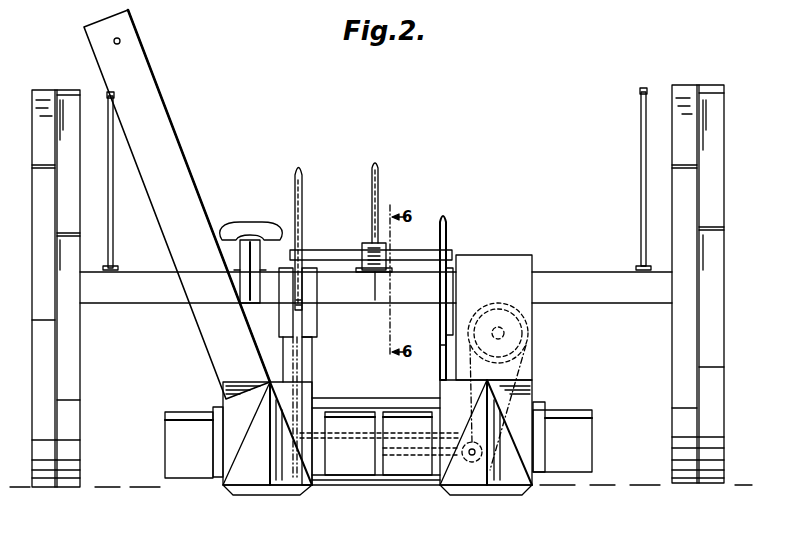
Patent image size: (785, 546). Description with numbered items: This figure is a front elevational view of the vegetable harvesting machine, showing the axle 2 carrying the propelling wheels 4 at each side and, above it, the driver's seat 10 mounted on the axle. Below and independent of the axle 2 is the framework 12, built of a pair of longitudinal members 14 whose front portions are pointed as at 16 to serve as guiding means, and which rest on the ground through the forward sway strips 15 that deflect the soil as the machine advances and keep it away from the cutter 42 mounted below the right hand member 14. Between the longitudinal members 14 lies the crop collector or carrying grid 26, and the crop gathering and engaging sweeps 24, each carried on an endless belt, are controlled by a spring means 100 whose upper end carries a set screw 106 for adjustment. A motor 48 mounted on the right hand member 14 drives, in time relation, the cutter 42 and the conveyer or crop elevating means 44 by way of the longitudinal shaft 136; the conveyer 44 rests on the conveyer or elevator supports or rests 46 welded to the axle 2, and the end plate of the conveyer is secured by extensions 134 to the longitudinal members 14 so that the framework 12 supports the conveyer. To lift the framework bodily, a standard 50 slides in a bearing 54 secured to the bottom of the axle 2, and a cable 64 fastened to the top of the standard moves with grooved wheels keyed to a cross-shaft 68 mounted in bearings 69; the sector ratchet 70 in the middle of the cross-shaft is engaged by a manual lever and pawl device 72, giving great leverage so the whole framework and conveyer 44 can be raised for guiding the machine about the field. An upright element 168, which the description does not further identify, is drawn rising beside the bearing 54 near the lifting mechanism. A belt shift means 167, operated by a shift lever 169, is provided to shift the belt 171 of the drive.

The axle 2 is at (145, 303).
The propelling wheels 4 is at (32, 290).
The driver's seat 10 is at (252, 226).
The framework 12 is at (232, 388).
The longitudinal members 14 is at (536, 405).
The forward sway strips 15 is at (297, 495).
The pointed front portions 16 is at (268, 470).
The sweeps 24 is at (178, 460).
The crop collector or carrying grid 26 is at (352, 486).
The cutter 42 is at (366, 481).
The conveyer or crop elevating means 44 is at (190, 186).
The conveyer or elevator supports or rests 46 is at (114, 222).
The motor 48 is at (490, 258).
The standard 50 is at (307, 360).
The bearing 54 is at (318, 325).
The cable 64 is at (294, 308).
The cross-shaft 68 is at (333, 250).
The bearings 69 is at (367, 245).
The sector ratchet 70 is at (375, 275).
The manual lever and pawl device 72 is at (380, 198).
The spring means 100 is at (352, 420).
The set screw 106 is at (348, 412).
The extensions 134 is at (516, 346).
The longitudinal shaft 136 is at (470, 462).
The belt shift means 167 is at (440, 350).
The post 168 is at (303, 175).
The shift lever 169 is at (447, 224).
The belt 171 is at (520, 358).